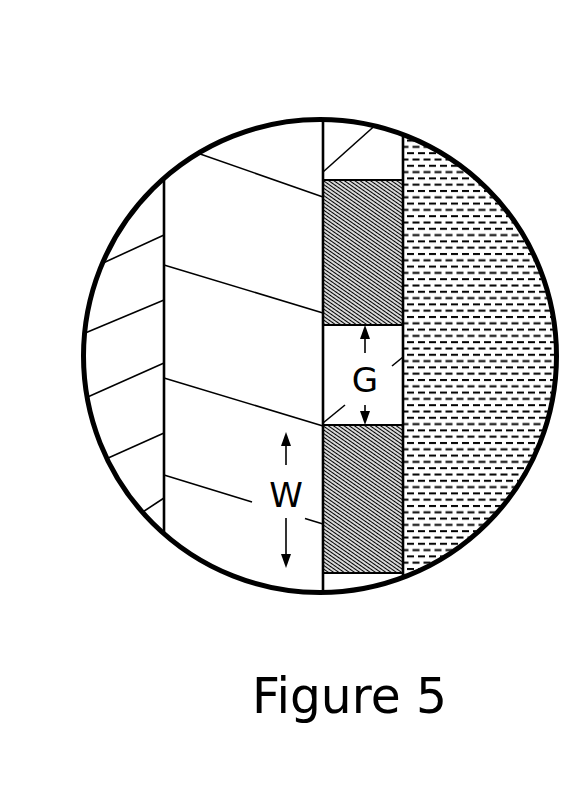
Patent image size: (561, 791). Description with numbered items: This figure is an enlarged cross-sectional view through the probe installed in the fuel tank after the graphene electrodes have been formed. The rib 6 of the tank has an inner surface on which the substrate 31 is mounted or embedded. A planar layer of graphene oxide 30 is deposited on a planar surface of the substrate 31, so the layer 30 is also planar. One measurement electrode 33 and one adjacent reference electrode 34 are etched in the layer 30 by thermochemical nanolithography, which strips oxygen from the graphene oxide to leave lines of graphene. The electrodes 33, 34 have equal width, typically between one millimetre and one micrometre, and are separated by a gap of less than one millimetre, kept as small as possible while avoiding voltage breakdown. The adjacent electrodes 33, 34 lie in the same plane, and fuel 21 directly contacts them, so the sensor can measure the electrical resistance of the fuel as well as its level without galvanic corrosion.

The rib 6 is at (135, 227).
The fuel 21 is at (477, 225).
The layer of graphene oxide 30 is at (377, 152).
The substrate 31 is at (273, 145).
The graphene measurement electrode 33 is at (393, 210).
The graphene reference electrode 34 is at (398, 537).